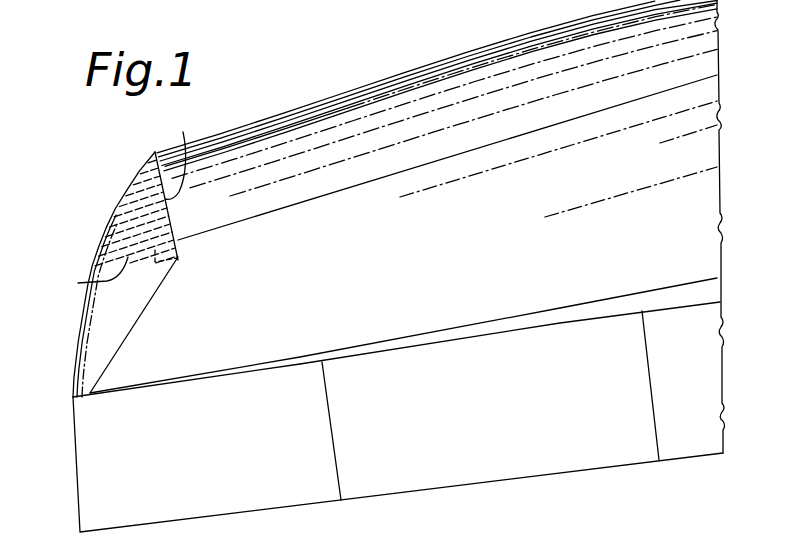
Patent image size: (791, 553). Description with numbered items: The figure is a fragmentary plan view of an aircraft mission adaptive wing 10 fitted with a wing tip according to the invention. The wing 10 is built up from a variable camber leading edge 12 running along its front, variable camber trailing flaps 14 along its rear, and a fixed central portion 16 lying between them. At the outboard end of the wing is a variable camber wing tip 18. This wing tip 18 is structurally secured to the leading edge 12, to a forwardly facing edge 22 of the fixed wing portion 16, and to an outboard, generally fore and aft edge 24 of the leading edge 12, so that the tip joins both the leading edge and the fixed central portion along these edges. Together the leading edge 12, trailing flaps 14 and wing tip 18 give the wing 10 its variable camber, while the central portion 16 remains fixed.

The aircraft mission adaptive wing 10 is at (64, 355).
The variable camber leading edge 12 is at (270, 189).
The variable camber trailing flaps 14 is at (225, 443).
The fixed central portion 16 is at (348, 278).
The variable camber wing tip 18 is at (122, 185).
The forwardly facing edge 22 is at (84, 277).
The outboard generally fore and aft edge 24 is at (185, 153).